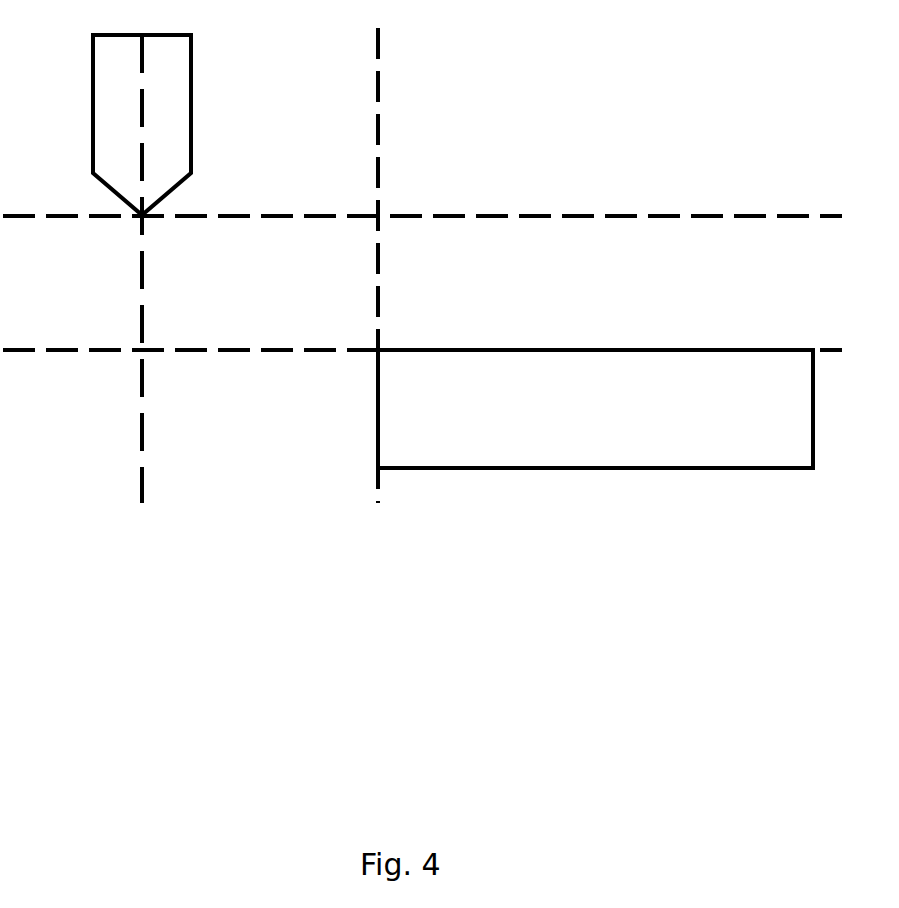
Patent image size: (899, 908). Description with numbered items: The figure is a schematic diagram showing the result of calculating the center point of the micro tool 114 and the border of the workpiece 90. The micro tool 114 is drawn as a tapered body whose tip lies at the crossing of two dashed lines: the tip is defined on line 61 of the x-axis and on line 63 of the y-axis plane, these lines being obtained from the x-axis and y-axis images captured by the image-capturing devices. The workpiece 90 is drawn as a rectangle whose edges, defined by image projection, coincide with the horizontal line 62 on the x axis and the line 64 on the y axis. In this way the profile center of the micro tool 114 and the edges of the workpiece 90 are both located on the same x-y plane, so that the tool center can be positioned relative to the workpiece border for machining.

The micro tool 114 is at (92, 118).
The y-axis tool tip line 63 is at (144, 318).
The y-axis workpiece edge line 64 is at (380, 84).
The x-axis tool tip line 61 is at (698, 213).
The x-axis workpiece edge line 62 is at (463, 348).
The workpiece 90 is at (595, 409).